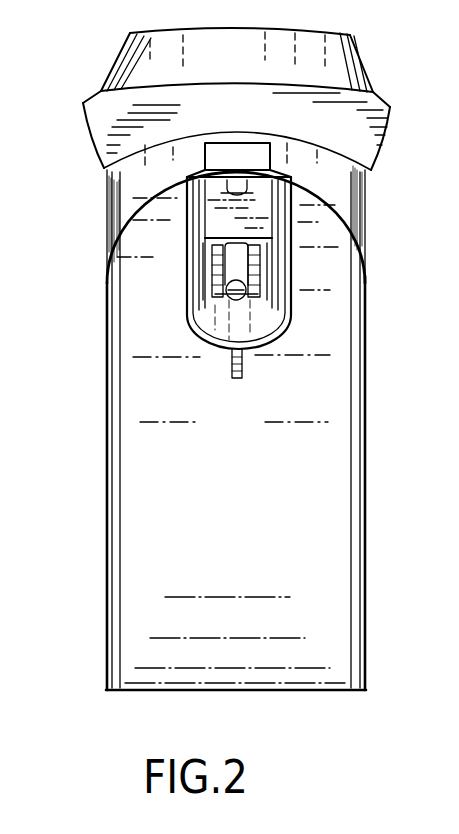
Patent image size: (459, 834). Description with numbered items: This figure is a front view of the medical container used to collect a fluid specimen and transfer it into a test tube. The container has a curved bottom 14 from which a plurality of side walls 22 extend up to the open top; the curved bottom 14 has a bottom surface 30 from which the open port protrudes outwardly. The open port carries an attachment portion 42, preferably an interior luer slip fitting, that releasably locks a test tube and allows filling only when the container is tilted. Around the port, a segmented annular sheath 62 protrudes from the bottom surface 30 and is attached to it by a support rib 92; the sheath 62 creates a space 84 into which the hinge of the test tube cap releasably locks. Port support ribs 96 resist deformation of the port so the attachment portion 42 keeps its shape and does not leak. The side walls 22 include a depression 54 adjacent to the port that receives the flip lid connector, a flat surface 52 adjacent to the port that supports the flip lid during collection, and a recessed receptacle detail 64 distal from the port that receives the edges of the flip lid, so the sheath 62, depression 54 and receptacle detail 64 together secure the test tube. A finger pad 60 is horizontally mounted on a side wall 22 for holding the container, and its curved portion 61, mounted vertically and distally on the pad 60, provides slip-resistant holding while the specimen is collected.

The curved bottom 14 is at (368, 358).
The side walls 22 is at (357, 217).
The bottom surface 30 is at (130, 436).
The attachment portion 42 is at (244, 294).
The flat surface 52 is at (195, 182).
The depression 54 is at (291, 178).
The finger pad 60 is at (393, 107).
The curved portion 61 is at (348, 62).
The segmented annular sheath 62 is at (198, 260).
The recessed receptacle detail 64 is at (233, 154).
The space 84 is at (214, 207).
The support rib 92 is at (241, 382).
The port support ribs 96 is at (219, 292).